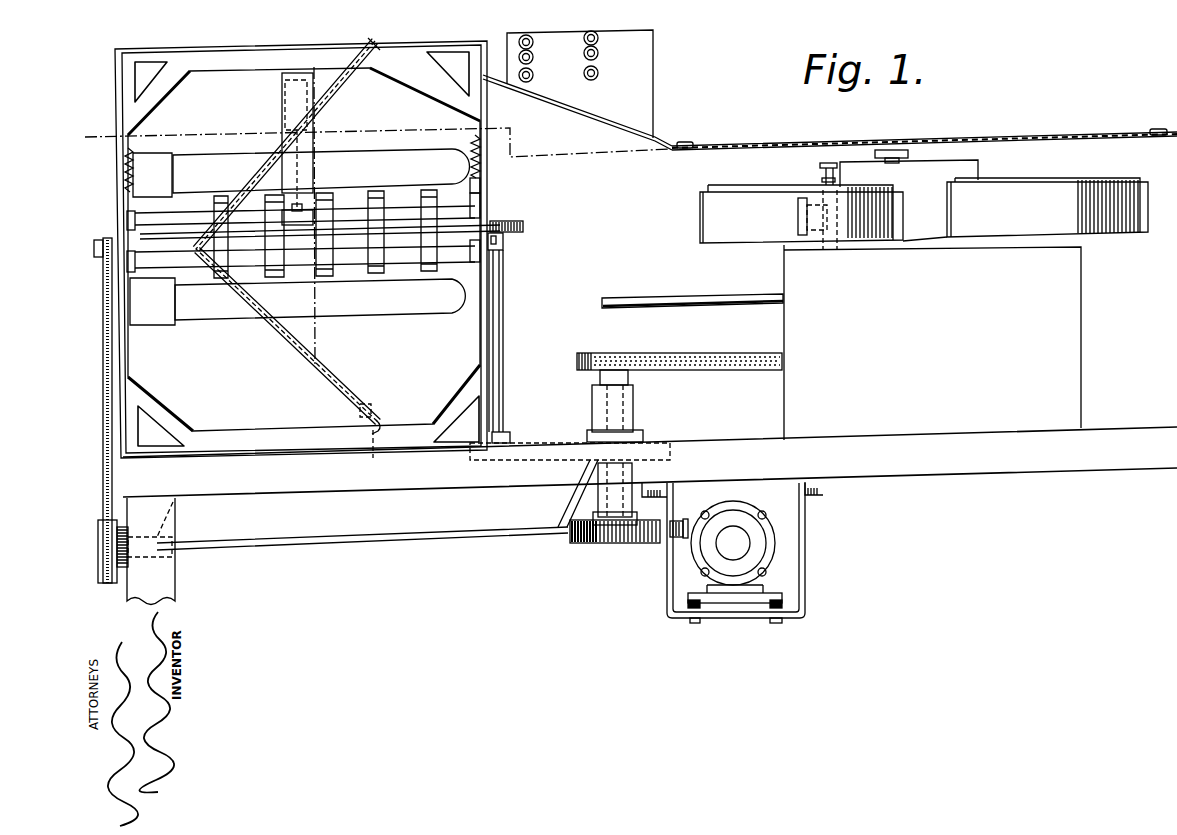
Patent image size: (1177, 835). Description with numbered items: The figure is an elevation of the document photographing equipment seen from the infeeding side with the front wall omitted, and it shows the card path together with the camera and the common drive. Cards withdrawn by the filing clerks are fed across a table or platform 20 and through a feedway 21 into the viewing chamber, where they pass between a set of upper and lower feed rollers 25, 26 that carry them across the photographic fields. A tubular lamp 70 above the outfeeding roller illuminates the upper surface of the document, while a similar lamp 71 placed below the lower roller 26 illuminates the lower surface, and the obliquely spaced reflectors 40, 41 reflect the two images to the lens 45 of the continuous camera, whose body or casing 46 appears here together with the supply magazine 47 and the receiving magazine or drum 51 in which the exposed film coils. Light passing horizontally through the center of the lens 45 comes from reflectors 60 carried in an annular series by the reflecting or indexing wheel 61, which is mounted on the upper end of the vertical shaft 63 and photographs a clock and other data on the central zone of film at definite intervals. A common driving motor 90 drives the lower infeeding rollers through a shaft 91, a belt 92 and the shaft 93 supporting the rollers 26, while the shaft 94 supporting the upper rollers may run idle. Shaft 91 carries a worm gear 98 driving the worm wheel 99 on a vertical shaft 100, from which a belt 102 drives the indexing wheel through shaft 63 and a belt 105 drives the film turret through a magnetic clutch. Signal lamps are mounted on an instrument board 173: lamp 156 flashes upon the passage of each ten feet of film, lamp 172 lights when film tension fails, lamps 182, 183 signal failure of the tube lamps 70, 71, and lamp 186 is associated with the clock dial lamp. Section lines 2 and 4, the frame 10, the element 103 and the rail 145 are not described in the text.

The section line 2- 2 is at (315, 405).
The section line 4- 4 is at (95, 139).
The frame 10 is at (201, 170).
The table or platform 20 is at (428, 262).
The feedway 21 is at (400, 258).
The upper feed roller 25 is at (376, 192).
The lower feed roller 26 is at (374, 275).
The upper reflector 40 is at (357, 88).
The lower reflector 41 is at (343, 374).
The lens 45 is at (798, 208).
The camera body or casing 46 is at (960, 177).
The magazine 47 is at (1104, 217).
The receiving magazine or drum 51 is at (757, 215).
The reflectors 60 is at (523, 228).
The reflecting or indexing wheel 61 is at (510, 222).
The vertical shaft 63 is at (498, 318).
The tubular lamp 70 is at (321, 171).
The tubular lamp 71 is at (213, 308).
The driving motor 90 is at (766, 543).
The shaft 91 is at (364, 548).
The belt 92 is at (104, 441).
The shaft 93 is at (165, 264).
The shaft 94 is at (158, 222).
The worm gear 98 is at (620, 545).
The worm wheel 99 is at (648, 545).
The vertical shaft 100 is at (618, 414).
The belt 102 is at (543, 458).
The switch 103 is at (897, 157).
The belt 105 is at (723, 365).
The rail 145 is at (660, 308).
The lamp 156 is at (519, 42).
The signal lamp 172 is at (522, 60).
The instrument board 173 is at (654, 110).
The signalling lamp 182 is at (600, 35).
The signal lamp 183 is at (600, 53).
The signal lamp 186 is at (600, 76).